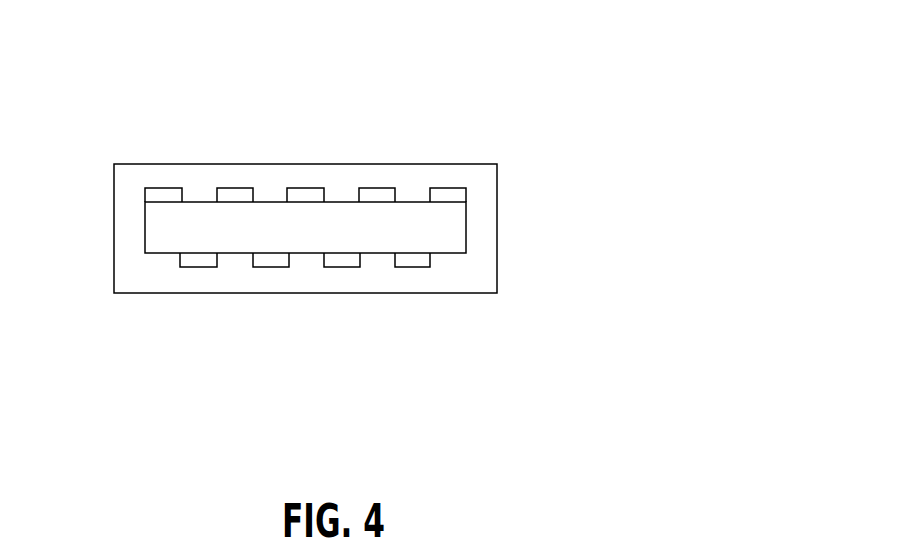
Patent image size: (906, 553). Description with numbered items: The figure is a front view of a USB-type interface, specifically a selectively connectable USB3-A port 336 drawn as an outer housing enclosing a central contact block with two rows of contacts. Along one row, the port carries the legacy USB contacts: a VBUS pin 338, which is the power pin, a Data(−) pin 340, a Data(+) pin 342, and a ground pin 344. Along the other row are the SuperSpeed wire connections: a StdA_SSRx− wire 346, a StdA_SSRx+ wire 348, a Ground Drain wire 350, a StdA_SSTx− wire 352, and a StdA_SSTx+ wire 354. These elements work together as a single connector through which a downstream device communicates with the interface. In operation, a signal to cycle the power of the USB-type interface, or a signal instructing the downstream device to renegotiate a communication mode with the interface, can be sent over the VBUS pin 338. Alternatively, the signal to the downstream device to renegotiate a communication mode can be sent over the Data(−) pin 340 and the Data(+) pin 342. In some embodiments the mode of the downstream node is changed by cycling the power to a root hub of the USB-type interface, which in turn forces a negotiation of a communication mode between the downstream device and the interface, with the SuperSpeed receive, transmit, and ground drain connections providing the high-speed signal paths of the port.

The USB3-A port 336 is at (602, 153).
The VBUS pin 338 is at (199, 267).
The Data(−) pin 340 is at (270, 267).
The Data(+) pin 342 is at (342, 267).
The ground pin 344 is at (412, 267).
The StdA_SSRx− wire 346 is at (158, 188).
The StdA_SSRx+ wire 348 is at (235, 190).
The Ground Drain wire 350 is at (306, 188).
The StdA_SSTx− wire 352 is at (377, 188).
The StdA_SSTx+ wire 354 is at (450, 188).